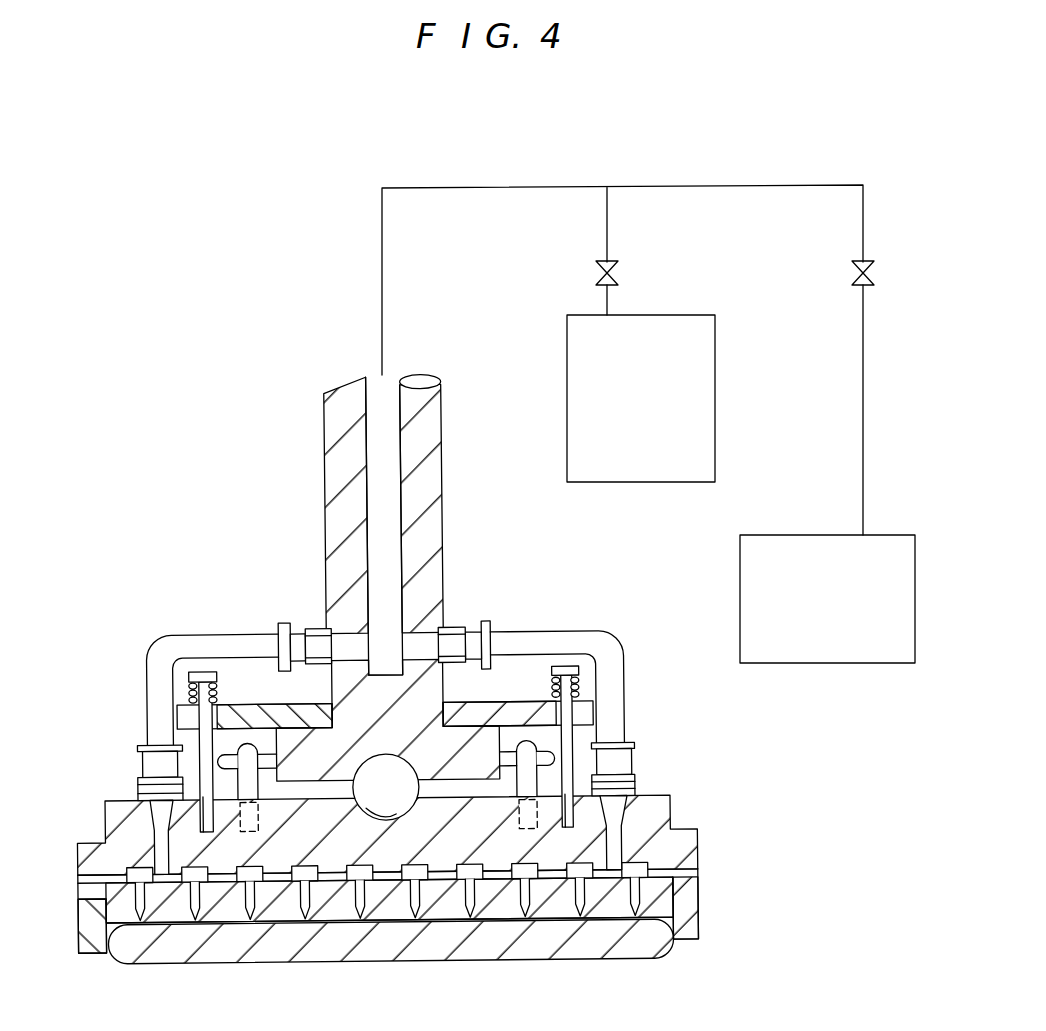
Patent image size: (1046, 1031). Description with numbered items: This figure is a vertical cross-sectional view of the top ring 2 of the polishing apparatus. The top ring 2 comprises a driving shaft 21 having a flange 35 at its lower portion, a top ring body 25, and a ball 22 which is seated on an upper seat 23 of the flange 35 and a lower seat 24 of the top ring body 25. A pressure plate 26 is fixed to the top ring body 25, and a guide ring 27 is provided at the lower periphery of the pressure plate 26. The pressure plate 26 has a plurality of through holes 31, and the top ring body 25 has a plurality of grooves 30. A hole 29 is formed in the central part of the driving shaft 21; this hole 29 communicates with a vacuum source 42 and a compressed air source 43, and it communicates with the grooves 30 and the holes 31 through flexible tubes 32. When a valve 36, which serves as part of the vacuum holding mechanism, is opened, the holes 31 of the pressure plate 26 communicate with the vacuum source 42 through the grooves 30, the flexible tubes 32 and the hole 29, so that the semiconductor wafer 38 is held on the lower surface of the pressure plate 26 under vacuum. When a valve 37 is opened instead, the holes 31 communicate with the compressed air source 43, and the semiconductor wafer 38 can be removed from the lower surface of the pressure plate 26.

The top ring 2 is at (417, 696).
The driving shaft 21 is at (429, 434).
The ball 22 is at (418, 742).
The upper seat 23 is at (408, 777).
The lower seat 24 is at (377, 812).
The top ring body 25 is at (646, 810).
The pressure plate 26 is at (673, 886).
The guide ring 27 is at (683, 915).
The hole 29 is at (390, 494).
The grooves 30 is at (606, 927).
The through holes 31 is at (526, 920).
The flexible tubes 32 is at (182, 645).
The flange 35 is at (297, 740).
The valve 36 is at (597, 273).
The valve 37 is at (855, 273).
The semiconductor wafer 38 is at (636, 946).
The vacuum source 42 is at (717, 369).
The compressed air source 43 is at (770, 535).